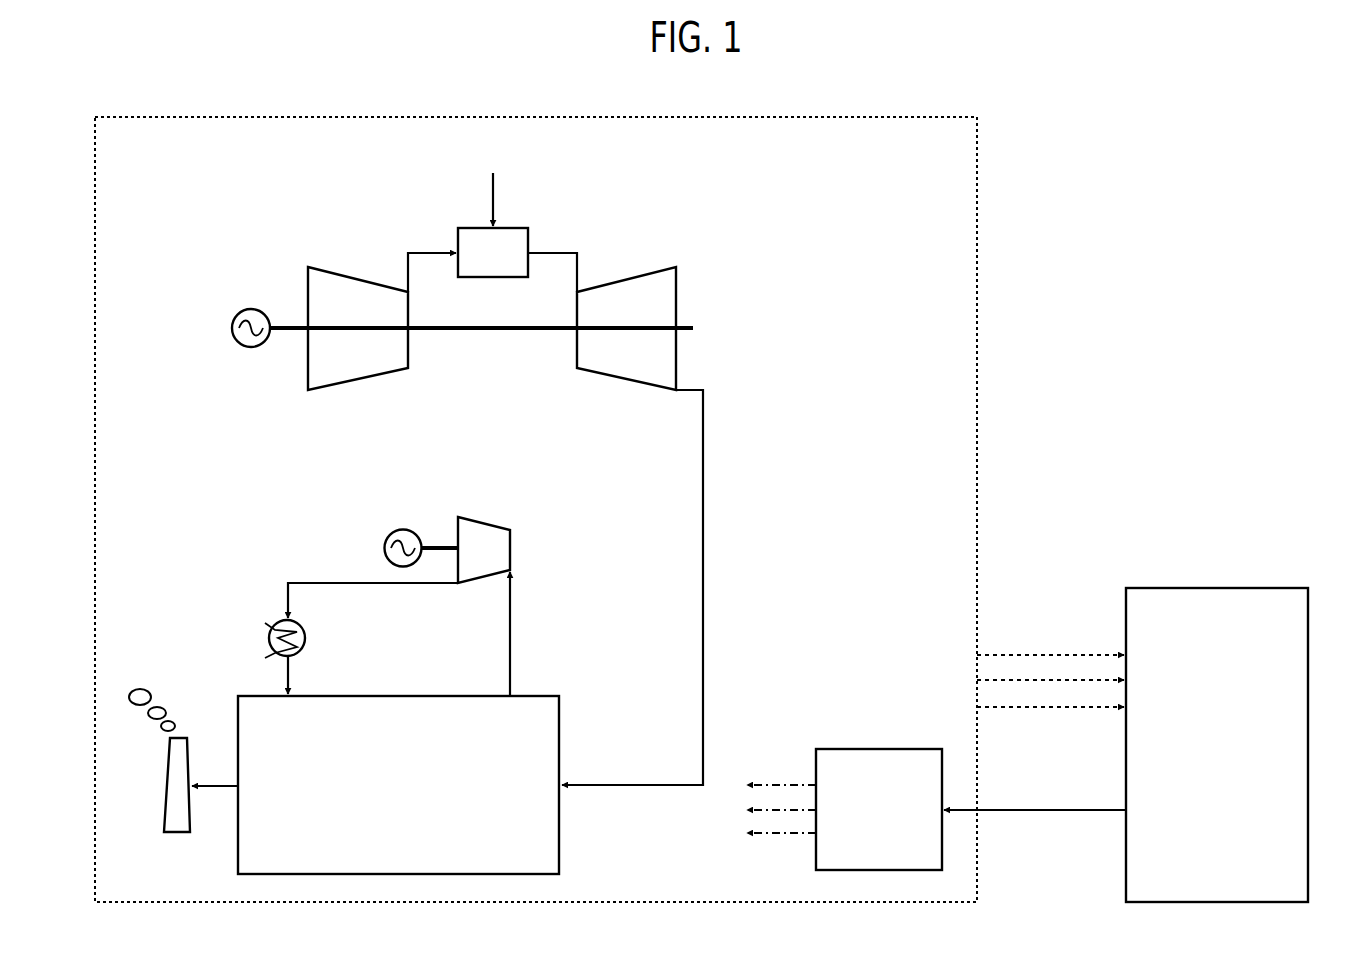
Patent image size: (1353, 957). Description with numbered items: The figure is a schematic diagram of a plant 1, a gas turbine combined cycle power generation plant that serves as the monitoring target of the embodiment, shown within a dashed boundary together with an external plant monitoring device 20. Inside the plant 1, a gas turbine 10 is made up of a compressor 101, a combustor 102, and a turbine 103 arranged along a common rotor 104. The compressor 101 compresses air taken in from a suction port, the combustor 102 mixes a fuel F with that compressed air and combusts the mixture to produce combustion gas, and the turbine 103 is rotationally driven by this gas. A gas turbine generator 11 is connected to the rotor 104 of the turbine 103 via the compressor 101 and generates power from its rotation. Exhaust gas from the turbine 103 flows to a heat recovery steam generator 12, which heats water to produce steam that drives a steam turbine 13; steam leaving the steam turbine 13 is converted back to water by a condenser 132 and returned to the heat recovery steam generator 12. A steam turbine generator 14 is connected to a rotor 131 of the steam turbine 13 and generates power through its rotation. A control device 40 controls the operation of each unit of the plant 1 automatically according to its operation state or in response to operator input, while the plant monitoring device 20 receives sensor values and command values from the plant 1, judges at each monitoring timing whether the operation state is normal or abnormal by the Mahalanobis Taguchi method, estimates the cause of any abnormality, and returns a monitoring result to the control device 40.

The plant 1 is at (913, 117).
The gas turbine 10 is at (481, 262).
The compressor 101 is at (362, 277).
The combustor 102 is at (507, 227).
The turbine 103 is at (622, 277).
The rotor 104 is at (492, 331).
The gas turbine generator 11 is at (253, 310).
The heat recovery steam generator 12 is at (533, 695).
The steam turbine 13 is at (487, 518).
The rotor 131 is at (442, 545).
The condenser 132 is at (308, 635).
The steam turbine generator 14 is at (383, 547).
The plant monitoring device 20 is at (1247, 588).
The control device 40 is at (887, 749).